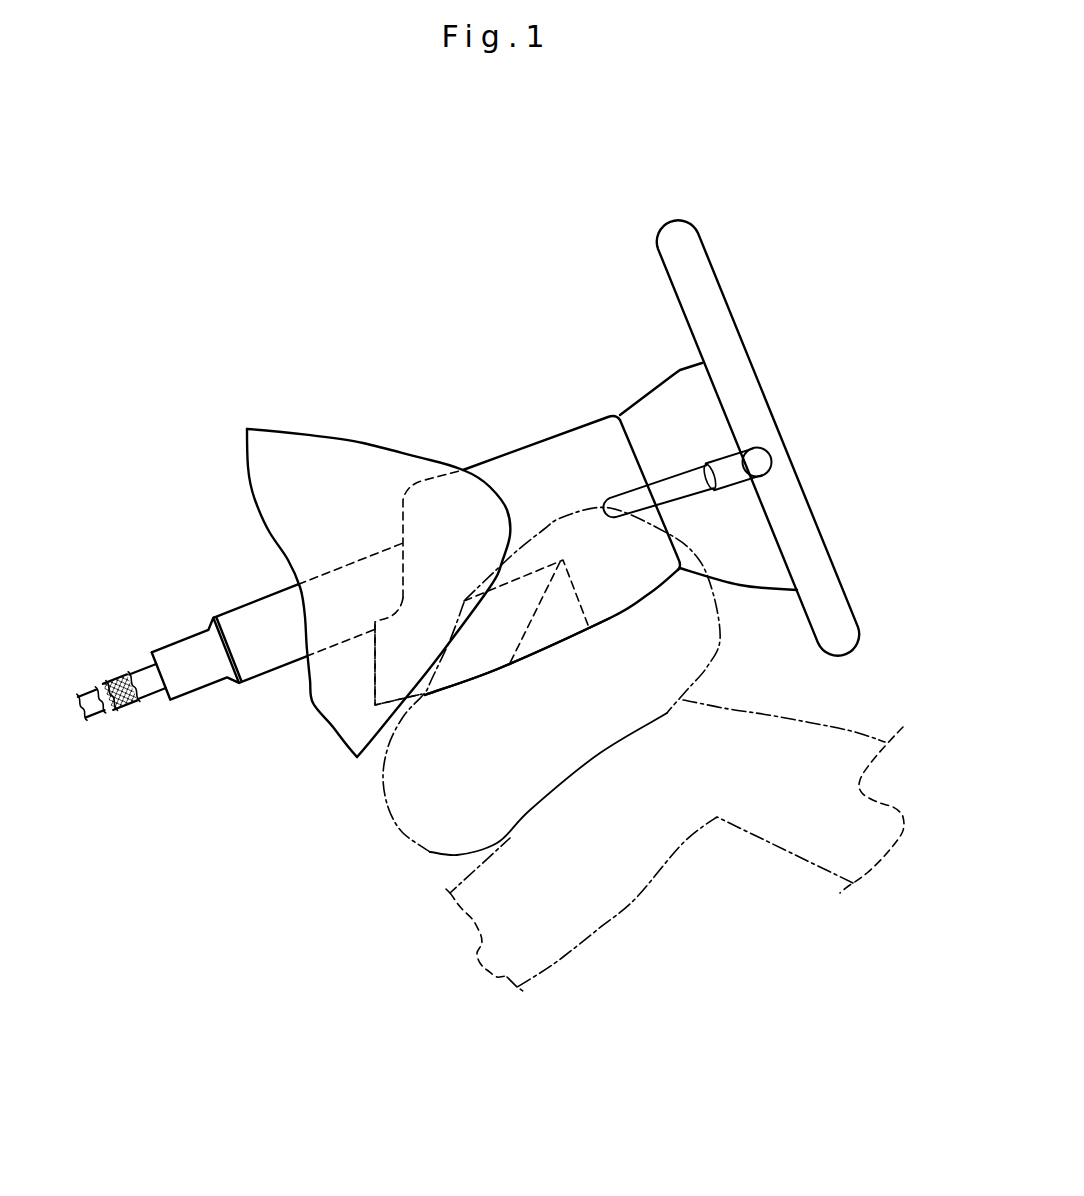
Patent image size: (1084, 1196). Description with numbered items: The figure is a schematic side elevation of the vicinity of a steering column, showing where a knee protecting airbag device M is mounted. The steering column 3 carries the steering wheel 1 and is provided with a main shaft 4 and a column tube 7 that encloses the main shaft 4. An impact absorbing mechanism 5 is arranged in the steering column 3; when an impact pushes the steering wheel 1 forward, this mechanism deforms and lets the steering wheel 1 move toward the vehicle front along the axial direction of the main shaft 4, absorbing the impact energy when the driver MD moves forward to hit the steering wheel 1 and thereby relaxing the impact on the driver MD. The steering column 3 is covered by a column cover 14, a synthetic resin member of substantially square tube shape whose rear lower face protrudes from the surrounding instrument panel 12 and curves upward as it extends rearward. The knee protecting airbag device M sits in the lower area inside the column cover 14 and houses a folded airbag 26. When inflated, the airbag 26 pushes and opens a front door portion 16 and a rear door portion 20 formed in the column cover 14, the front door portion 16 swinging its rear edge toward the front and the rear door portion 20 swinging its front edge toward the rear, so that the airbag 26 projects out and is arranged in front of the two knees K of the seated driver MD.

The steering wheel 1 is at (779, 321).
The steering column 3 is at (113, 531).
The main shaft 4 is at (147, 672).
The impact absorbing mechanism 5 is at (130, 717).
The column tube 7 is at (234, 600).
The instrument panel 12 is at (322, 445).
The column cover 14 is at (569, 421).
The front door portion 16 is at (473, 663).
The rear door portion 20 is at (555, 640).
The airbag 26 is at (700, 665).
The knees K is at (627, 882).
The knee protecting airbag device M is at (518, 705).
The driver MD is at (768, 866).